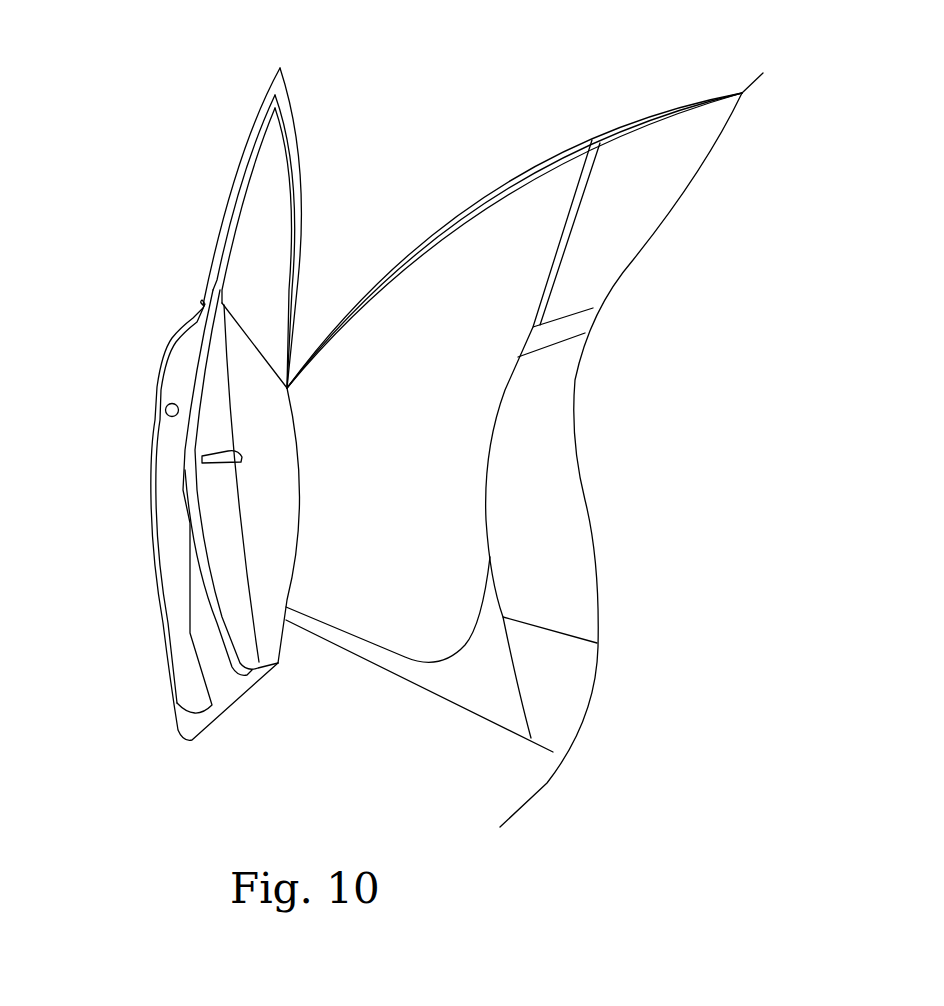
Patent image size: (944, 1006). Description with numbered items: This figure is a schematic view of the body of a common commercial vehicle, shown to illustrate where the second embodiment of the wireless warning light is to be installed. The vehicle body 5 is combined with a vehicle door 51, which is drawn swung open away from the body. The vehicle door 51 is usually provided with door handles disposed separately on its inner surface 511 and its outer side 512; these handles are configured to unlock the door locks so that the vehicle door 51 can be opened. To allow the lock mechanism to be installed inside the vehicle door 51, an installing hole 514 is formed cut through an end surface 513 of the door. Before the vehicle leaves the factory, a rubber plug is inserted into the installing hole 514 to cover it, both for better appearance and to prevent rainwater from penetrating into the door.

The vehicle body 5 is at (545, 263).
The vehicle door 51 is at (226, 396).
The inner surface 511 is at (264, 623).
The outer side 512 is at (158, 622).
The end surface 513 is at (168, 490).
The installing hole 514 is at (167, 415).